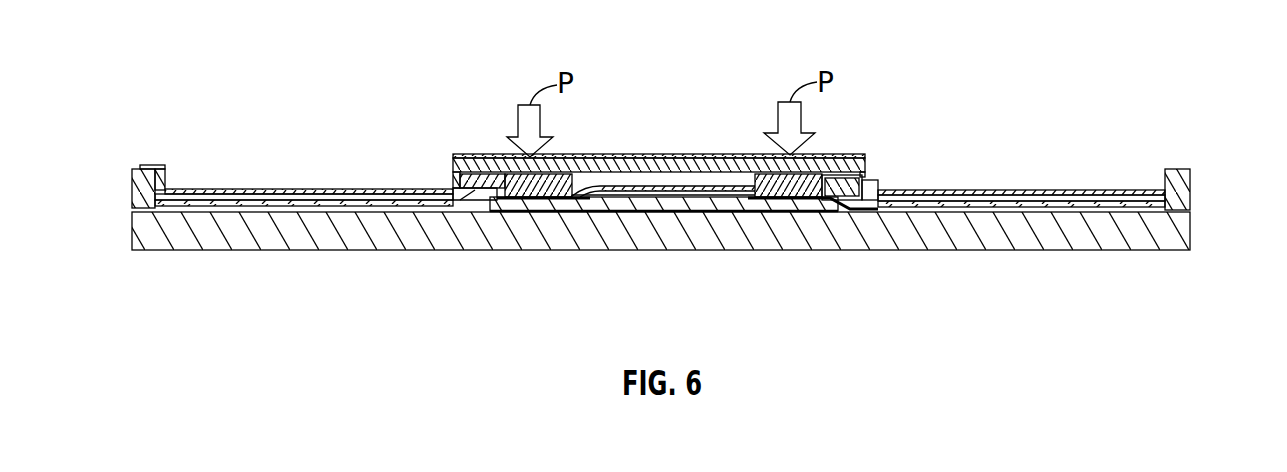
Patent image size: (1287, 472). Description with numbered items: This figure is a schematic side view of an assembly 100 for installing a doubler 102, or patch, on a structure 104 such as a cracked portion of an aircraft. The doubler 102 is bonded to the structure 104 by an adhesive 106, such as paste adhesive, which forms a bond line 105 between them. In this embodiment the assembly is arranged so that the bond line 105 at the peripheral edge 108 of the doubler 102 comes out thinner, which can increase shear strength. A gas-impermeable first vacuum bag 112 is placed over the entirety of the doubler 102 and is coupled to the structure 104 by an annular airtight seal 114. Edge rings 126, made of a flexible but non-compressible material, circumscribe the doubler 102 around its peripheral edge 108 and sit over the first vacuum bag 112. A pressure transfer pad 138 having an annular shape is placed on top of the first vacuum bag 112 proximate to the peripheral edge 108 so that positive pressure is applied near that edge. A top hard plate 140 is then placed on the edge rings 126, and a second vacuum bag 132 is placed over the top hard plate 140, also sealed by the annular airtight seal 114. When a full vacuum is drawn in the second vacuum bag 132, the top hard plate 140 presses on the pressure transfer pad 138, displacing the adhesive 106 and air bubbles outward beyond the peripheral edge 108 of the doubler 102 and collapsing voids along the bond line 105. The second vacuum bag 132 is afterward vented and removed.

The assembly 100 is at (1087, 50).
The doubler 102 is at (542, 207).
The structure 104 is at (1183, 230).
The bond line 105 is at (790, 215).
The adhesive 106 is at (662, 215).
The peripheral edge 108 is at (453, 185).
The first vacuum bag 112 is at (260, 203).
The annular airtight seal 114 is at (1183, 183).
The edge rings 126 is at (855, 160).
The second vacuum bag 132 is at (330, 192).
The pressure transfer pad 138 is at (500, 157).
The top hard plate 140 is at (643, 162).